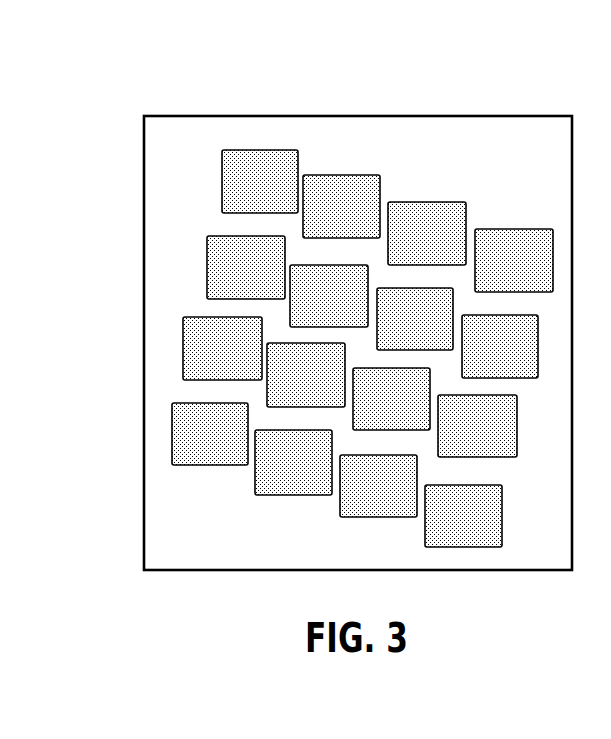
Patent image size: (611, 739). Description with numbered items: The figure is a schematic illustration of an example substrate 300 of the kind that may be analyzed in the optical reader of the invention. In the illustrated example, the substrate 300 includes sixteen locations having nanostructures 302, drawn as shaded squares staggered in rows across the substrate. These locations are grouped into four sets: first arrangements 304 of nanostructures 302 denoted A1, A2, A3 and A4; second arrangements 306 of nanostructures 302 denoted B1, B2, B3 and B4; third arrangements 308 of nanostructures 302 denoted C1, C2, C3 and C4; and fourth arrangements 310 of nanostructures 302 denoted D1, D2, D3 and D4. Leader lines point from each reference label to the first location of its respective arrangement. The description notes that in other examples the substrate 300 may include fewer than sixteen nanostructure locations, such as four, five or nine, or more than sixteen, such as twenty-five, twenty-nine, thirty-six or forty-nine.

The substrate 300 is at (304, 300).
The nanostructures 302 is at (112, 543).
The first arrangements of nanostructures 304 is at (218, 183).
The second arrangements of nanostructures 306 is at (200, 260).
The third arrangements of nanostructures 308 is at (177, 348).
The fourth arrangements of nanostructures 310 is at (167, 437).